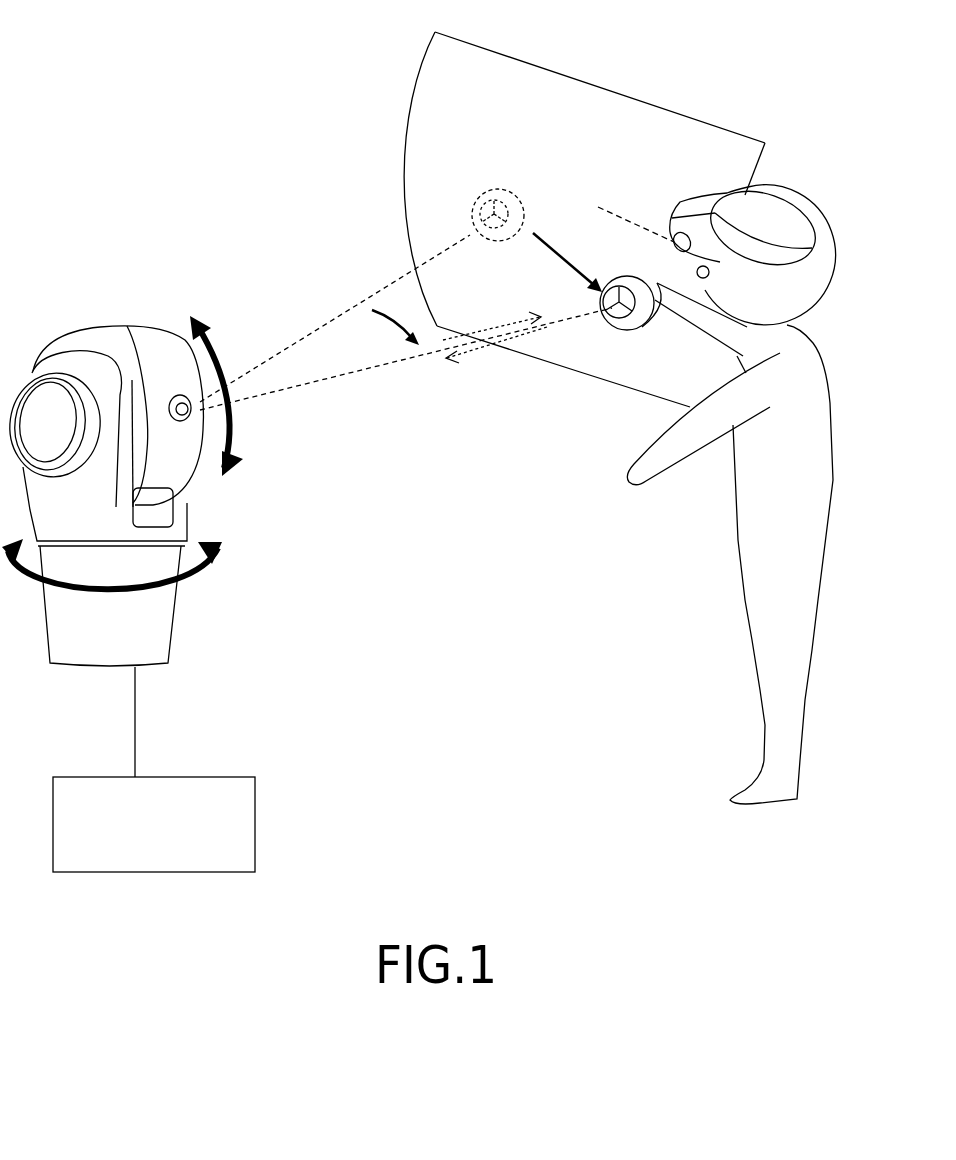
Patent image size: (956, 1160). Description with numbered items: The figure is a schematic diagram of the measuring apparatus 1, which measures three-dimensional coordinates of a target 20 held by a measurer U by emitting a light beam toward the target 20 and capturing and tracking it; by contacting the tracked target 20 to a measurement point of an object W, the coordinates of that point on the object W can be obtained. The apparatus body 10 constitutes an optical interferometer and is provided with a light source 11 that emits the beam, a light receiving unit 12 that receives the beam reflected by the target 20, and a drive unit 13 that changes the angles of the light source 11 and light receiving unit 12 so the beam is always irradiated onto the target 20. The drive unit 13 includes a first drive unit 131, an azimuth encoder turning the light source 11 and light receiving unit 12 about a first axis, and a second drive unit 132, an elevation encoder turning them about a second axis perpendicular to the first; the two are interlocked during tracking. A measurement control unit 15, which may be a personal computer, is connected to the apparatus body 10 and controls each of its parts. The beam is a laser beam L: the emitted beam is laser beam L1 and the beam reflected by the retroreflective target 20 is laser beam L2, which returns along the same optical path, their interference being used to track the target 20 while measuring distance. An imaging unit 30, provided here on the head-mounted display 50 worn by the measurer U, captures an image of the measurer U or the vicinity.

The measuring apparatus 1 is at (144, 96).
The apparatus body 10 is at (107, 293).
The light source 11 is at (246, 425).
The light receiving unit 12 is at (191, 412).
The drive unit 13 is at (298, 478).
The first drive unit 131 is at (190, 488).
The second drive unit 132 is at (163, 607).
The measurement control unit 15 is at (257, 815).
The target 20 is at (640, 326).
The imaging unit 30 is at (620, 270).
The head-mounted display 50 is at (705, 200).
The object W is at (655, 117).
The measurer U is at (828, 410).
The laser beam L is at (347, 374).
The laser beam (emitted) L1 is at (492, 322).
The laser beam (reflected) L2 is at (496, 353).